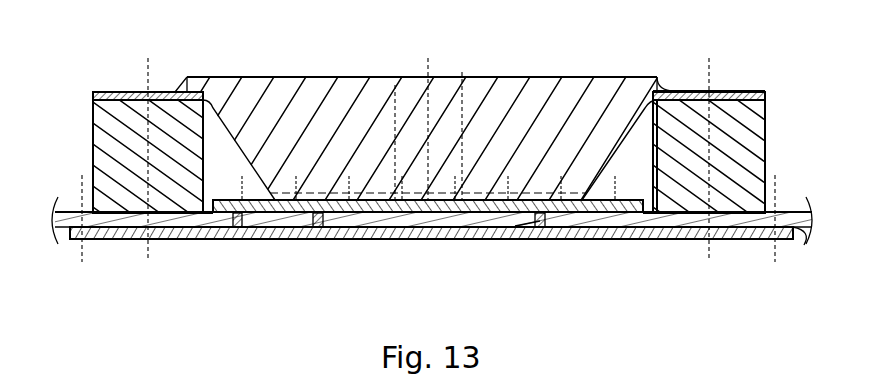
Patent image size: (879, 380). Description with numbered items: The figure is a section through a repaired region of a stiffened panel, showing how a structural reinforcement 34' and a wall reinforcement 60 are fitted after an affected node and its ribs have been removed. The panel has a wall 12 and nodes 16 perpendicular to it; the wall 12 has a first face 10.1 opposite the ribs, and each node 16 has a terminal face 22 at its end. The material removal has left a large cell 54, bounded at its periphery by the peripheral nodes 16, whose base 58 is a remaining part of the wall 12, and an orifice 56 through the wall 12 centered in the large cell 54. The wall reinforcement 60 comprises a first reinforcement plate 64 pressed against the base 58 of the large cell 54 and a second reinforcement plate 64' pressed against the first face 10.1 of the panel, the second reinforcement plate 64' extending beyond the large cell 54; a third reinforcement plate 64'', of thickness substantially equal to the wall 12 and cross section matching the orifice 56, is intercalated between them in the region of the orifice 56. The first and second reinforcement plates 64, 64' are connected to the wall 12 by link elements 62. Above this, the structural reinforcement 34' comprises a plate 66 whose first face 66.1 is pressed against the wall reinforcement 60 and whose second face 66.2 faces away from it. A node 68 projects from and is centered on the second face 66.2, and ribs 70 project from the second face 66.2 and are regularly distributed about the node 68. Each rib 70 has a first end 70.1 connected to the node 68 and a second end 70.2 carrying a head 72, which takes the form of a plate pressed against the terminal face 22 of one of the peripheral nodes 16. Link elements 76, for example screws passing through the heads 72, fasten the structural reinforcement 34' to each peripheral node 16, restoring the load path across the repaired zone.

The first face 10.1 is at (794, 231).
The wall 12 is at (789, 200).
The node 16 is at (108, 153).
The terminal face 22 is at (103, 91).
The structural reinforcement 34' is at (565, 49).
The large cell 54 is at (221, 156).
The orifice 56 is at (527, 239).
The base 58 is at (216, 202).
The wall reinforcement 60 is at (370, 252).
The link element 62 is at (452, 239).
The first reinforcement plate 64 is at (431, 247).
The second reinforcement plate 64' is at (657, 267).
The third reinforcement plate 64'' is at (423, 265).
The plate 66 is at (578, 180).
The first face 66.1 is at (274, 238).
The second face 66.2 is at (341, 195).
The node 68 is at (450, 68).
The rib 70 is at (283, 70).
The first end 70.1 is at (383, 95).
The second end 70.2 is at (200, 78).
The head 72 is at (123, 88).
The link element 76 is at (147, 72).